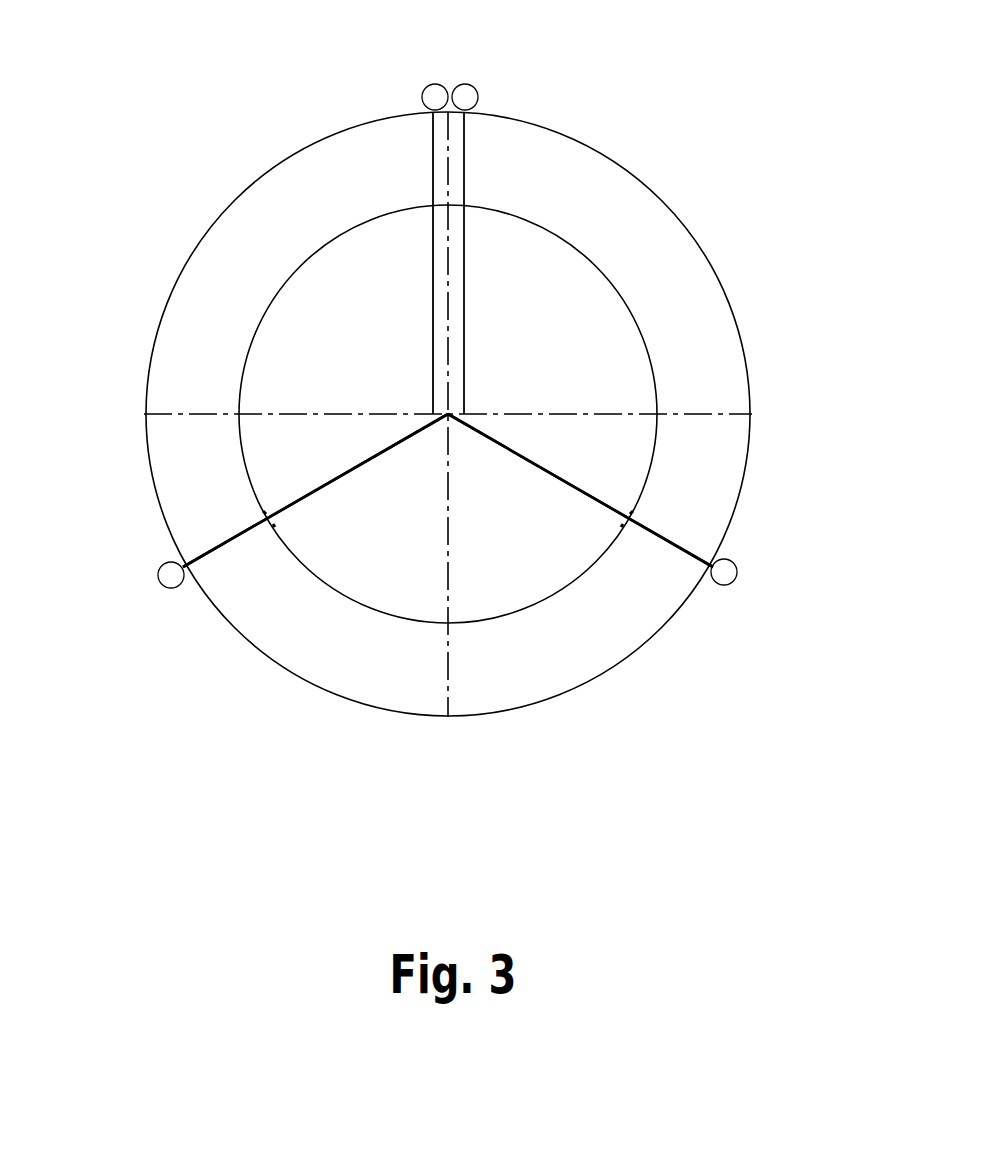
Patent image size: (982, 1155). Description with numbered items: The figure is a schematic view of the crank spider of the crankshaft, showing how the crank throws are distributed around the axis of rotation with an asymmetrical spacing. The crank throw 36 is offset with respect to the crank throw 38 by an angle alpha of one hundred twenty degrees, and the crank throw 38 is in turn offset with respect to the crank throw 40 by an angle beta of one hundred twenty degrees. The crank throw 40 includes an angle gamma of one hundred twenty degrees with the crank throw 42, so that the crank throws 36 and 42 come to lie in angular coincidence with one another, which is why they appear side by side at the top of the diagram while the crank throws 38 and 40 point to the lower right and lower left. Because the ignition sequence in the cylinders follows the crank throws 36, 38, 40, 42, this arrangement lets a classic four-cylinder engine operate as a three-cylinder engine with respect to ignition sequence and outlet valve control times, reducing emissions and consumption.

The crank throw 36 is at (433, 85).
The crank throw 42 is at (467, 86).
The crank throw 38 is at (722, 572).
The crank throw 40 is at (176, 575).